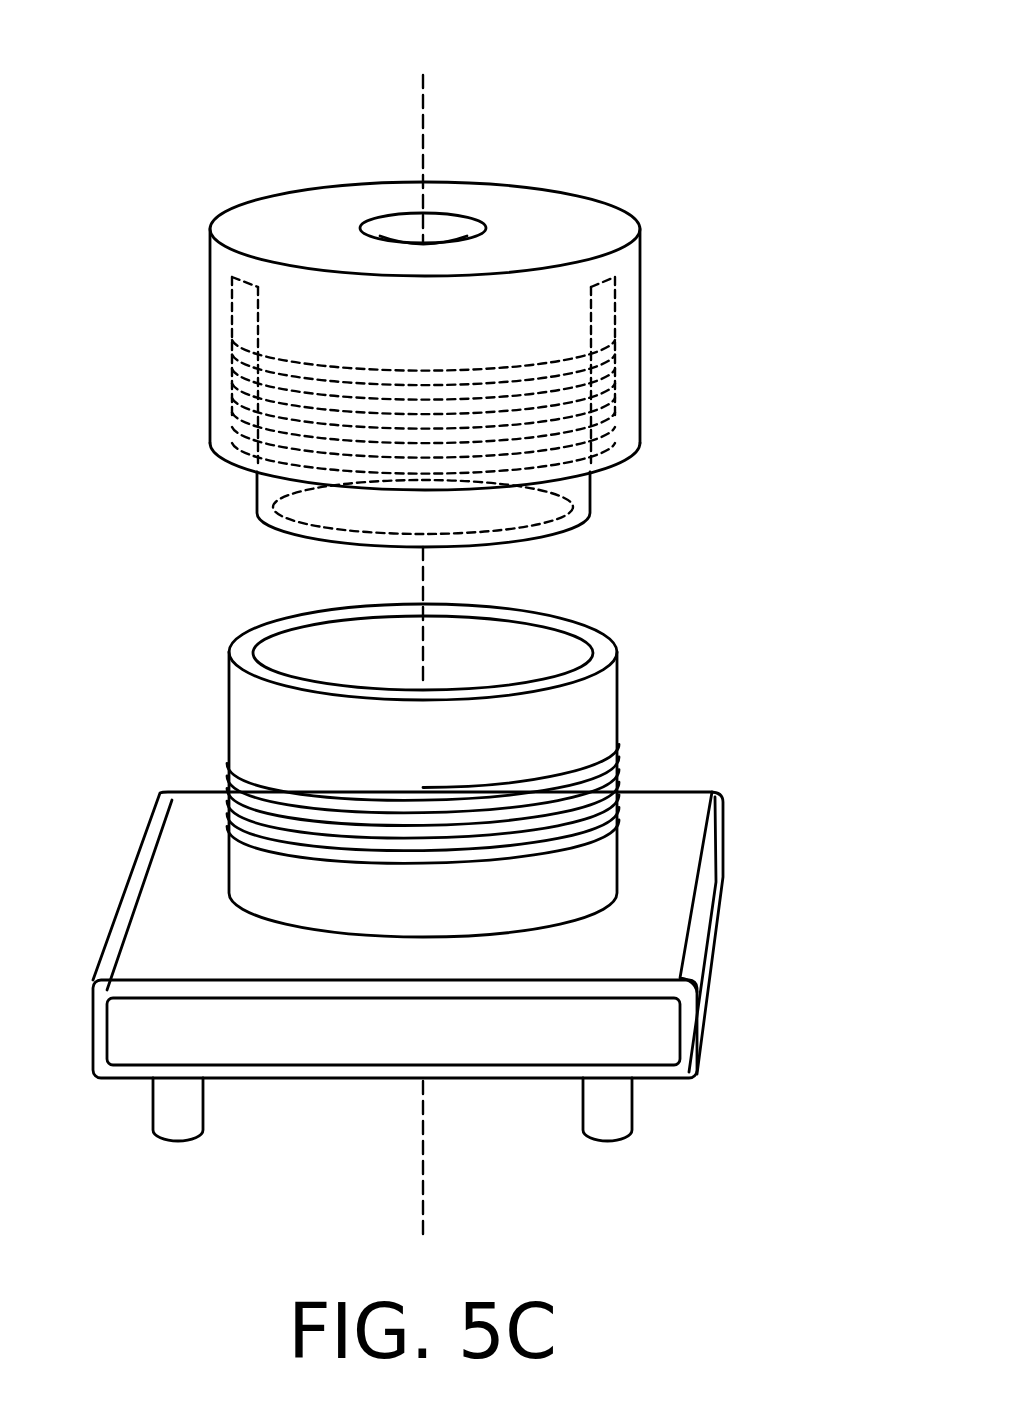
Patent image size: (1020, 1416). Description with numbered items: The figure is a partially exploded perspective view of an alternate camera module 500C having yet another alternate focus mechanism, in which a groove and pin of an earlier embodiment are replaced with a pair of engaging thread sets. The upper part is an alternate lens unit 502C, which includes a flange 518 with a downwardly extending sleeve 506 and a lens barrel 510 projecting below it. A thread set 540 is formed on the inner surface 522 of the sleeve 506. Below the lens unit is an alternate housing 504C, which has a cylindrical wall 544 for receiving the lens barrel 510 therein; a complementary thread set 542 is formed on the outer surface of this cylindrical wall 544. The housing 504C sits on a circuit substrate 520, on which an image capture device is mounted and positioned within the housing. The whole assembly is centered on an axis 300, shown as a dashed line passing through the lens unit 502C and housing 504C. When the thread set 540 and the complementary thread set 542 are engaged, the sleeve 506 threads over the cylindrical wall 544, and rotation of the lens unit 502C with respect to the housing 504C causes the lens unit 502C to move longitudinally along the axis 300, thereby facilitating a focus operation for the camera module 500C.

The camera module 500C is at (245, 70).
The axis 300 is at (423, 636).
The lens unit 502C is at (712, 253).
The flange 518 is at (233, 264).
The inner surface 522 is at (233, 305).
The thread set 540 is at (263, 392).
The sleeve 506 is at (627, 373).
The lens barrel 510 is at (593, 491).
The cylindrical wall 544 is at (247, 682).
The housing 504C is at (798, 749).
The complementary thread set 542 is at (233, 810).
The circuit substrate 520 is at (503, 1083).